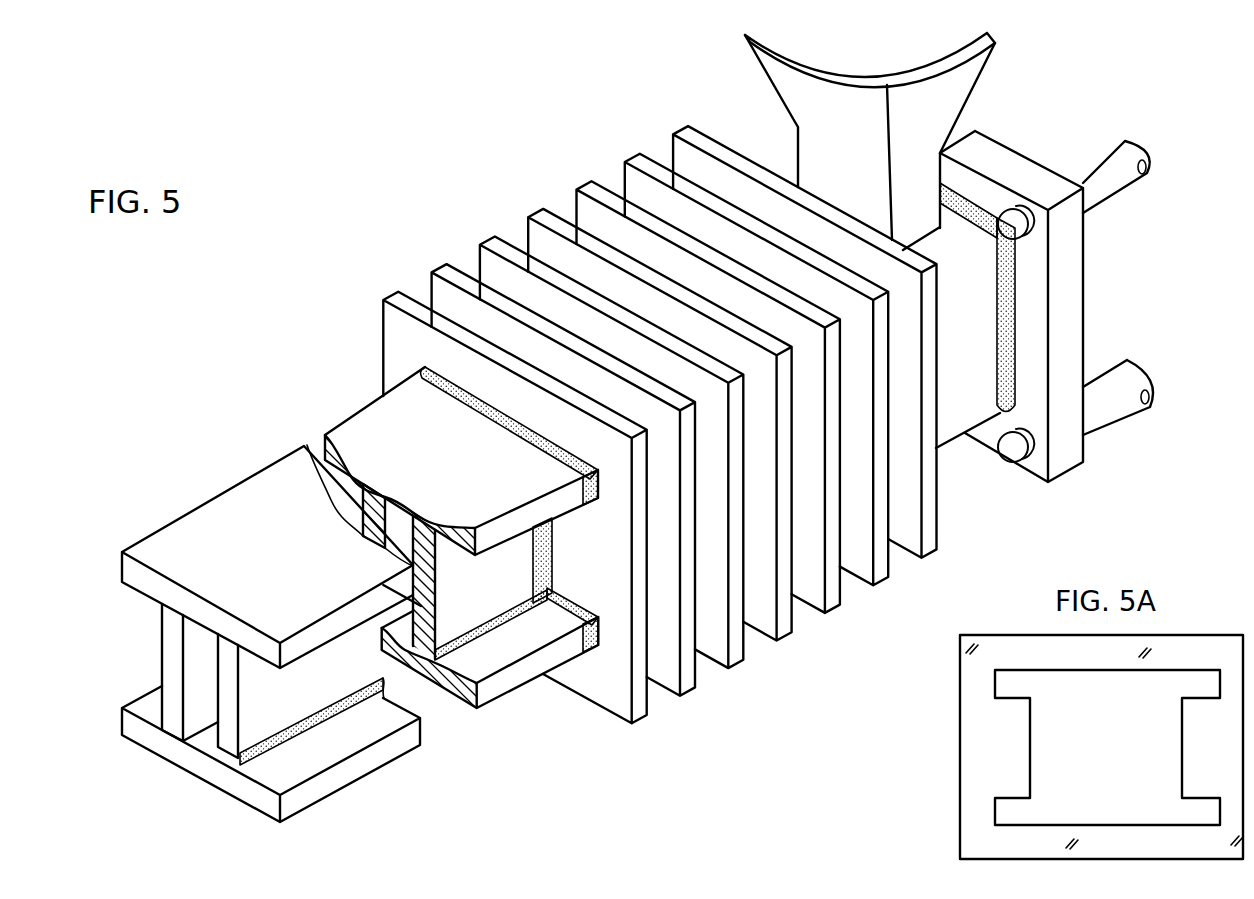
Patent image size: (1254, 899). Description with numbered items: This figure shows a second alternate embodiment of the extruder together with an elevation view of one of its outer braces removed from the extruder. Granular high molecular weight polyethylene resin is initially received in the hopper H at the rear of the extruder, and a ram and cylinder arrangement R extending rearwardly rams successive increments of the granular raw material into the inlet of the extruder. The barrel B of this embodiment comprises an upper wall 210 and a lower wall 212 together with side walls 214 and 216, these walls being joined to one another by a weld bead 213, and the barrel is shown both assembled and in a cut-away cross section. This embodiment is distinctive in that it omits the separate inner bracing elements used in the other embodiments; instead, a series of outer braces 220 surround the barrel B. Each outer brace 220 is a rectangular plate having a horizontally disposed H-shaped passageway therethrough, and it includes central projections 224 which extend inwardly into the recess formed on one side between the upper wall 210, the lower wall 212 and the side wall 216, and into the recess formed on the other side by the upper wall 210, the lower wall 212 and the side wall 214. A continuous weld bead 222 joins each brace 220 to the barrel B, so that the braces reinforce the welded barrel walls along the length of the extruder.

In FIG. 5, the upper wall 210 is at (178, 530).
In FIG. 5, the lower wall 212 is at (140, 738).
In FIG. 5, the weld bead 213 is at (342, 712).
In FIG. 5, the side wall 214 is at (175, 665).
In FIG. 5, the side wall 216 is at (228, 698).
In FIG. 5, the outer brace 220 is at (610, 688).
In FIG. 5A, the outer brace 220 is at (966, 708).
In FIG. 5, the weld bead 222 is at (500, 410).
In FIG. 5, the central projection 224 is at (572, 584).
In FIG. 5A, the central projection 224 is at (1182, 735).
In FIG. 5, the barrel B is at (220, 498).
In FIG. 5, the hopper H is at (953, 100).
In FIG. 5, the ram and cylinder arrangement R is at (1022, 170).